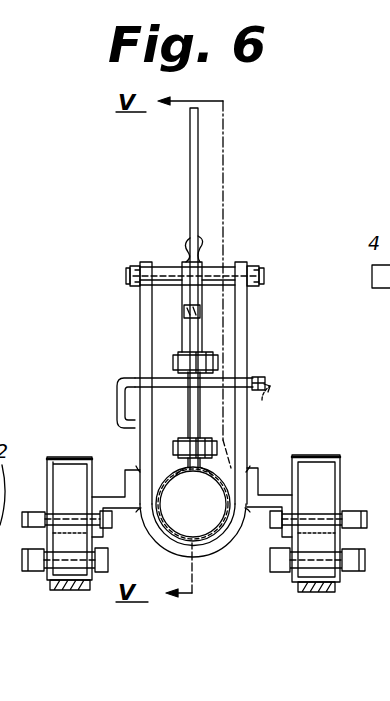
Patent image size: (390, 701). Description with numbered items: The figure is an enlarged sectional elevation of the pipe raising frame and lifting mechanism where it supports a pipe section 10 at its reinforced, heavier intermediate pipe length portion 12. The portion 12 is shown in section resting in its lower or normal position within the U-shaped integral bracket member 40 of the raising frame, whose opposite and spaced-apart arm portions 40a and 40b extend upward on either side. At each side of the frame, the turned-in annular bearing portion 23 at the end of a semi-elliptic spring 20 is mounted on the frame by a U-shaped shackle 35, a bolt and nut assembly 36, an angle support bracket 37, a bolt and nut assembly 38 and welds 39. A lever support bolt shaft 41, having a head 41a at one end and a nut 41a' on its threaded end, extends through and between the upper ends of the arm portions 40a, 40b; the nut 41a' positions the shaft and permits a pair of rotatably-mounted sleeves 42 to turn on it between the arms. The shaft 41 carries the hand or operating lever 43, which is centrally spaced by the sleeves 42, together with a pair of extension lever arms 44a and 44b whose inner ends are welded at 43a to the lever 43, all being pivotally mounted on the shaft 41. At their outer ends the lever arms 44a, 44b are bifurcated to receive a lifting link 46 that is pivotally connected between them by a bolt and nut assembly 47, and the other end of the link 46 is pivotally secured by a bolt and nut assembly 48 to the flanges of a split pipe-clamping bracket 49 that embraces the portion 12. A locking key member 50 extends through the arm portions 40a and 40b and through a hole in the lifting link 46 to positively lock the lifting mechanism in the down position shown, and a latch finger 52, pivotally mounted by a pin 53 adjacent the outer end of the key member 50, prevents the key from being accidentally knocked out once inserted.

The pipe section 10 is at (210, 503).
The intermediate pipe length portion 12 is at (193, 504).
The semi-elliptic spring 20 is at (60, 586).
The annular bearing portion 23 is at (62, 534).
The U-shaped shackle 35 is at (70, 448).
The bolt and nut assembly 36 is at (108, 562).
The angle support bracket 37 is at (105, 496).
The bolt and nut assembly 38 is at (32, 511).
The weld 39 is at (137, 468).
The U-shaped integral bracket member 40 is at (236, 577).
The arm portion 40a is at (140, 322).
The arm portion 40b is at (247, 324).
The lever support bolt shaft 41 is at (166, 286).
The head 41a is at (105, 264).
The nut 41a' is at (279, 263).
The sleeve 42 is at (166, 262).
The operating lever 43 is at (190, 170).
The weld 43a is at (188, 262).
The extension lever arm 44a is at (186, 342).
The extension lever arm 44b is at (203, 346).
The lifting link 46 is at (201, 405).
The bolt and nut assembly 47 is at (173, 363).
The bolt and nut assembly 48 is at (181, 448).
The split pipe-clamping bracket 49 is at (183, 461).
The locking key member 50 is at (119, 388).
The latch finger 52 is at (262, 400).
The pin 53 is at (265, 380).